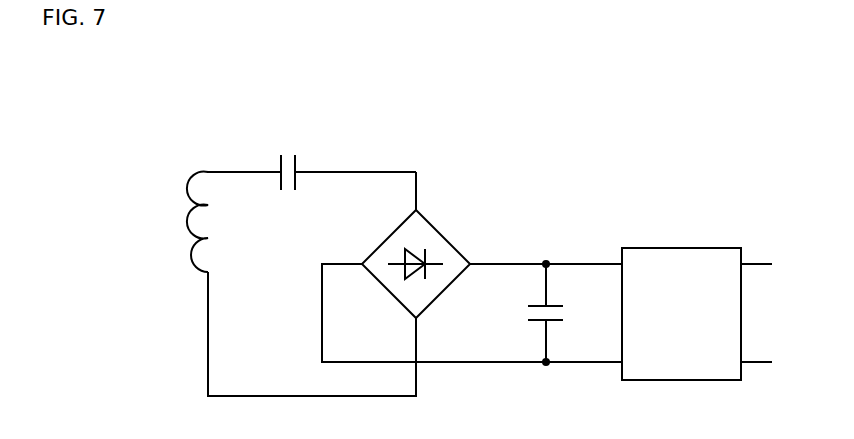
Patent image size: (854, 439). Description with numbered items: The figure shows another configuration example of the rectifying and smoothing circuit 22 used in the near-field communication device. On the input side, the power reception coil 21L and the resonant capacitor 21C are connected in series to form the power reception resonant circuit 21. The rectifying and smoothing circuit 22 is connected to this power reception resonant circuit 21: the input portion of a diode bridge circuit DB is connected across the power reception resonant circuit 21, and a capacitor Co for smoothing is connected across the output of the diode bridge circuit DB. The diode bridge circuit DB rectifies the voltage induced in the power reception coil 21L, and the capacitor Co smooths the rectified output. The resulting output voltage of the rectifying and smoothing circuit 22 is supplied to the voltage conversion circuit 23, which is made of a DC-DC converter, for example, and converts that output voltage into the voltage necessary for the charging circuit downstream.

The power reception resonant circuit 21 is at (463, 100).
The power reception coil 21L is at (208, 170).
The resonant capacitor 21C is at (320, 156).
The rectifying and smoothing circuit 22 is at (355, 80).
The diode bridge circuit DB is at (444, 233).
The capacitor for smoothing Co is at (575, 313).
The voltage conversion circuit 23 is at (683, 248).